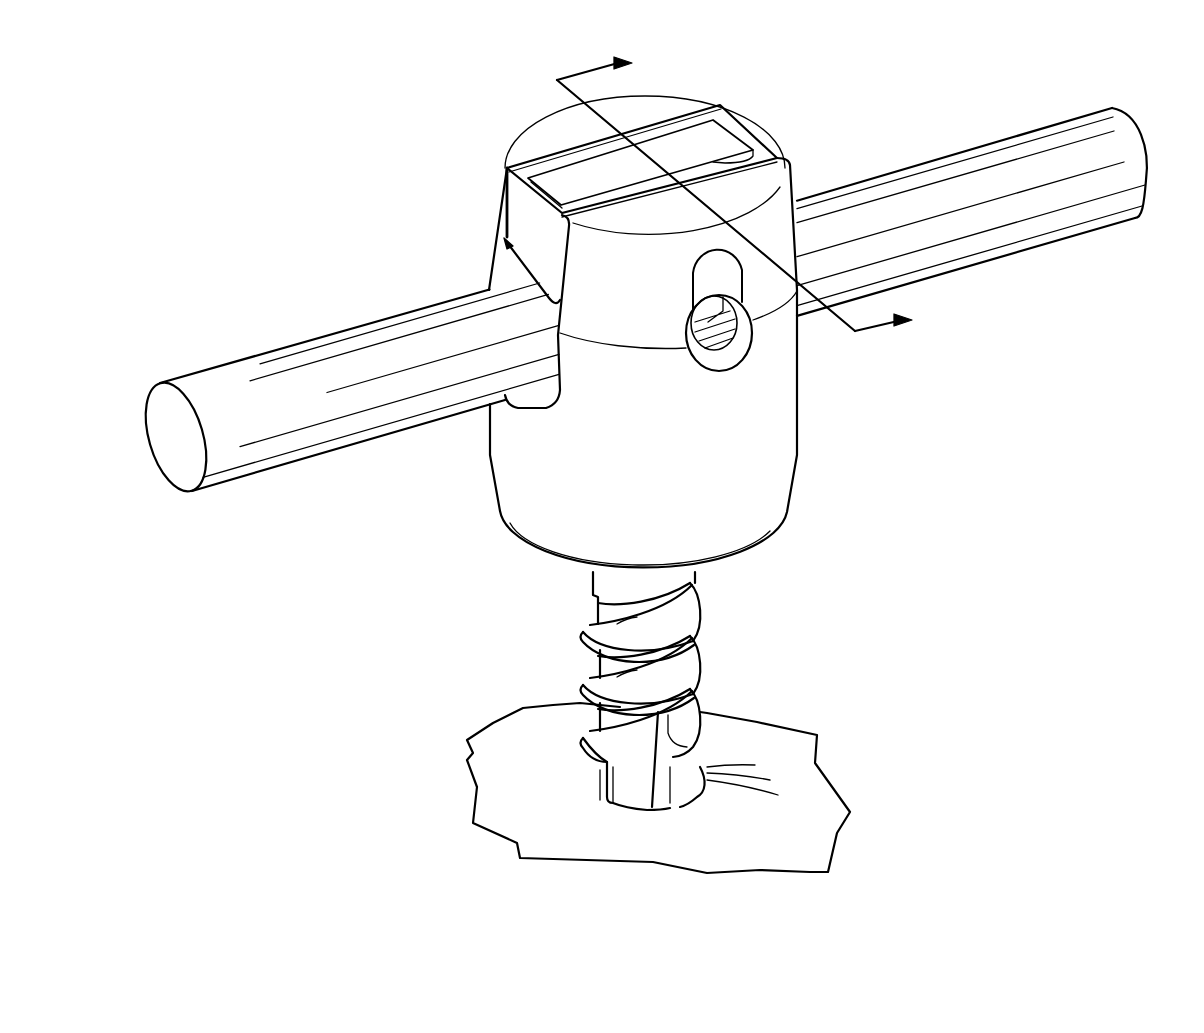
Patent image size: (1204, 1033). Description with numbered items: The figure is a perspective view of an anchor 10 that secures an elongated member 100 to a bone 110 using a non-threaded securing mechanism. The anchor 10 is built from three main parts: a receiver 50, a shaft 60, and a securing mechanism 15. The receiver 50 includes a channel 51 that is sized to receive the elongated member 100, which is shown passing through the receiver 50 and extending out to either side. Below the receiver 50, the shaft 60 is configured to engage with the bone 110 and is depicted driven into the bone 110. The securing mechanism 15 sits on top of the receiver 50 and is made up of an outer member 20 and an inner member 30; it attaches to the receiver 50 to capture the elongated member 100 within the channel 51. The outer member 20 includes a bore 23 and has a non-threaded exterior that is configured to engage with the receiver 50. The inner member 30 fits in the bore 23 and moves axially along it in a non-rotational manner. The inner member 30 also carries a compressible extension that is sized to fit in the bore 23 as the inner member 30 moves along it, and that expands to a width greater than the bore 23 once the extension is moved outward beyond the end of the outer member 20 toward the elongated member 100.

The anchor 10 is at (1027, 498).
The securing mechanism 15 is at (762, 110).
The outer member 20 is at (540, 233).
The bore 23 is at (765, 147).
The inner member 30 is at (613, 157).
The receiver 50 is at (748, 418).
The channel 51 is at (510, 260).
The shaft 60 is at (593, 622).
The elongated member 100 is at (878, 212).
The bone 110 is at (785, 798).